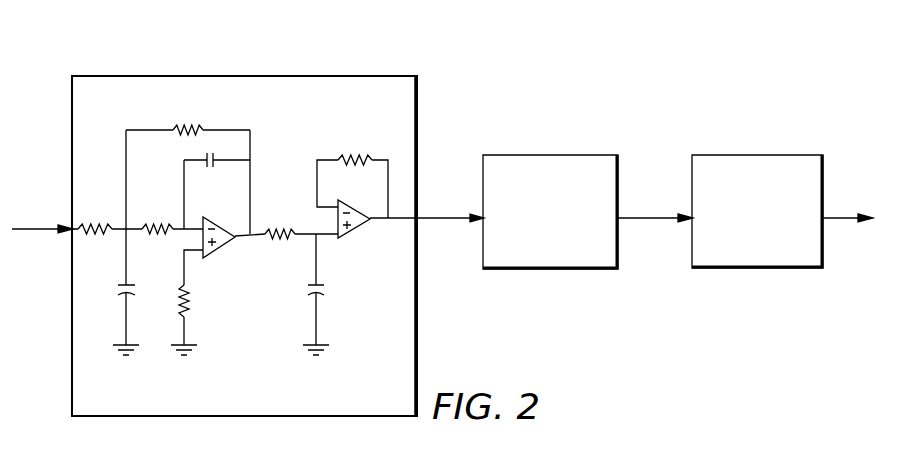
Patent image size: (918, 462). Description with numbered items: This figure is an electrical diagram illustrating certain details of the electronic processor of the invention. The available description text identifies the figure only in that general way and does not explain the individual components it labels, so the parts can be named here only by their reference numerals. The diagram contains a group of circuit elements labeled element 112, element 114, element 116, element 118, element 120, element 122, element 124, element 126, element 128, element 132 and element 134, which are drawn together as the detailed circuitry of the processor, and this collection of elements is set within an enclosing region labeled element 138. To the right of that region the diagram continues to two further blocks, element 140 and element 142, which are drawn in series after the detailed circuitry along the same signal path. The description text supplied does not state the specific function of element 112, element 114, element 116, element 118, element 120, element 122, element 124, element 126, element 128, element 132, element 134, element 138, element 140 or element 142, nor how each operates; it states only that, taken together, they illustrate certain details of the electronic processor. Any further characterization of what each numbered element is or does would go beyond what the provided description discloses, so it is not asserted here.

The first operational amplifier 112 is at (222, 252).
The second operational amplifier 114 is at (357, 235).
The input resistor 116 is at (109, 175).
The resistor 118 is at (163, 175).
The feedback capacitor 120 is at (228, 163).
The feedback resistor 122 is at (197, 126).
The resistor to ground 124 is at (189, 307).
The capacitor to ground 126 is at (124, 294).
The coupling resistor 128 is at (288, 232).
The feedback resistor 132 is at (350, 152).
The capacitor to ground 134 is at (318, 297).
The filter circuit 138 is at (348, 76).
The processing block 140 is at (577, 154).
The output block 142 is at (762, 154).